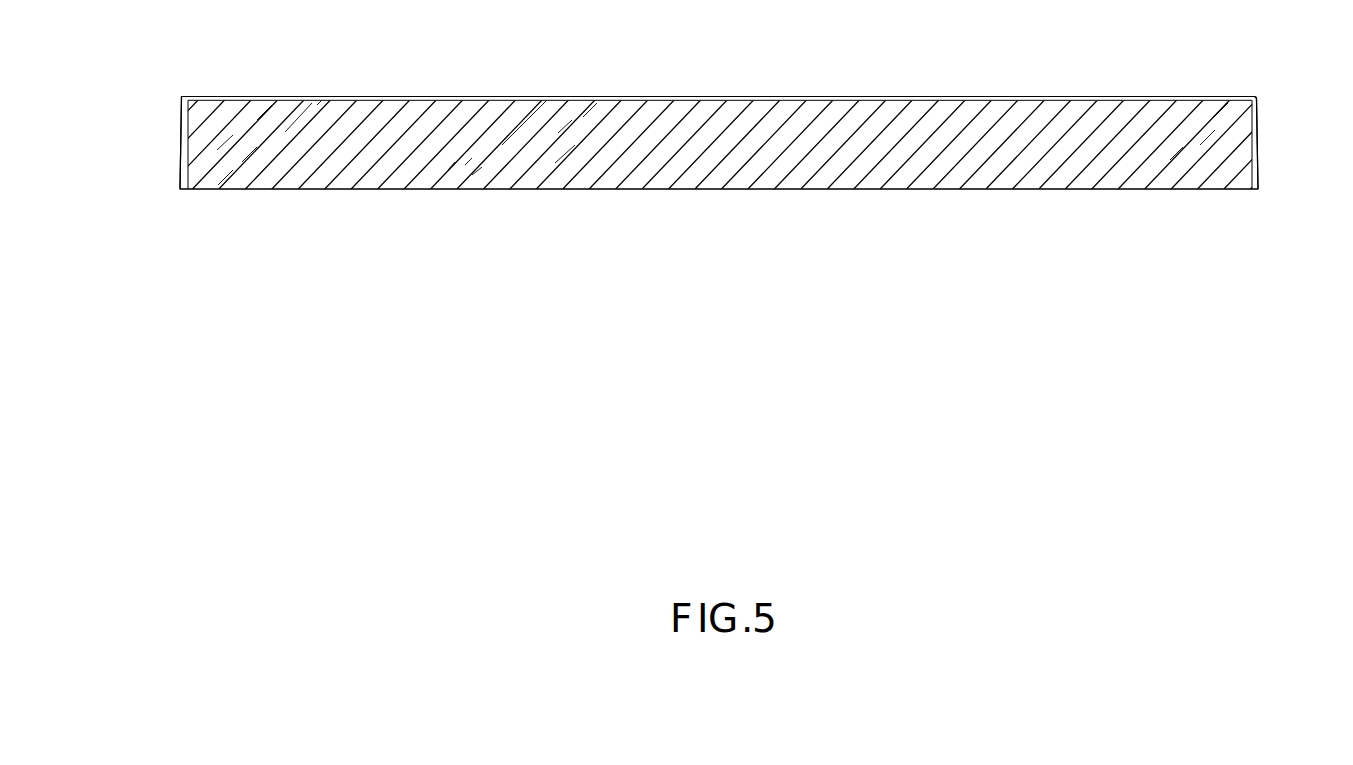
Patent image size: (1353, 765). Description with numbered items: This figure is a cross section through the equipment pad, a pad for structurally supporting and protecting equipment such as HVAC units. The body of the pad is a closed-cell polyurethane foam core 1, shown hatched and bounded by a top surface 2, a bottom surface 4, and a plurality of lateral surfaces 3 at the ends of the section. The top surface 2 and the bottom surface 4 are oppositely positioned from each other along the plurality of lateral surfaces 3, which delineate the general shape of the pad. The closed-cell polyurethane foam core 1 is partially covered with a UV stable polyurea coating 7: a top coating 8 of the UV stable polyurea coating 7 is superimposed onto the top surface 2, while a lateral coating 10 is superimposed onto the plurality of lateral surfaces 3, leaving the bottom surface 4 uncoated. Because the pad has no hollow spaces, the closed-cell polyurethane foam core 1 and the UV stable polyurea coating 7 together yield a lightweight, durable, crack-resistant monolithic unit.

The closed-cell polyurethane foam core 1 is at (720, 198).
The top surface 2 is at (466, 101).
The plurality of lateral surfaces 3 is at (189, 143).
The bottom surface 4 is at (580, 191).
The UV stable polyurea coating 7 is at (838, 66).
The top coating 8 is at (535, 97).
The lateral coating 10 is at (181, 131).